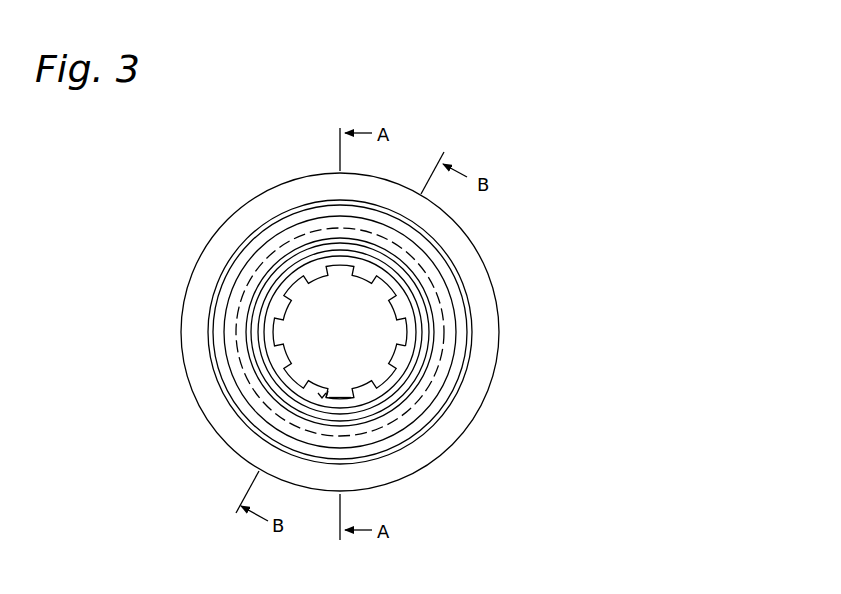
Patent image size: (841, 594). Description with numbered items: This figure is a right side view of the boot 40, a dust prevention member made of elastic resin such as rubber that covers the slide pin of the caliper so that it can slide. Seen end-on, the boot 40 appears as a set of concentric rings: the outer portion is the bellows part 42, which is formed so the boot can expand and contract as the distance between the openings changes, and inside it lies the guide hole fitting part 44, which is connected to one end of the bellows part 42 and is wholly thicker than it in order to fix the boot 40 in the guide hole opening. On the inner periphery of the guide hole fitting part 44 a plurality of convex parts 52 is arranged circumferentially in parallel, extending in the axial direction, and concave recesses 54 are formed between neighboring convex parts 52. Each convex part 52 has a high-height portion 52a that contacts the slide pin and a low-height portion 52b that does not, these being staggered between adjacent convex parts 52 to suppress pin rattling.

The boot 40 is at (509, 297).
The bellows part 42 is at (474, 264).
The guide hole fitting part 44 is at (452, 346).
The convex parts 52 is at (309, 382).
The high-height portion 52a is at (342, 398).
The low-height portion 52b is at (316, 394).
The concave recesses 54 is at (325, 395).